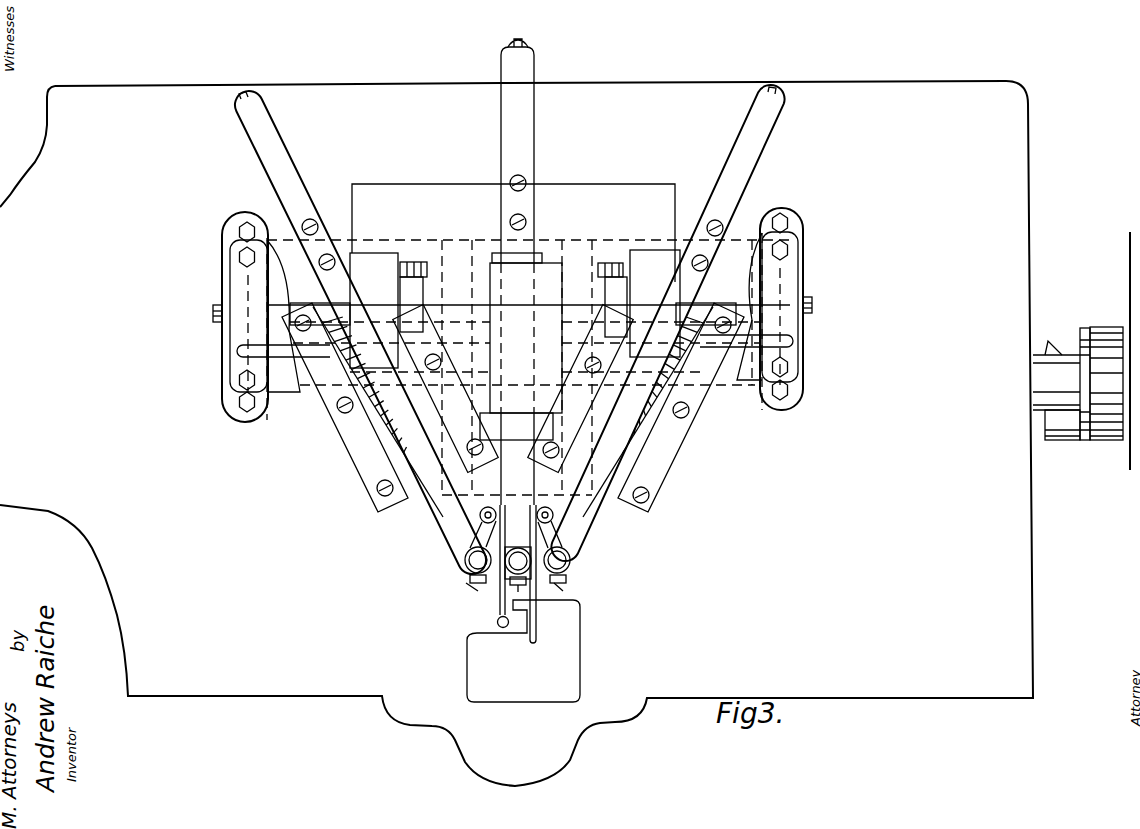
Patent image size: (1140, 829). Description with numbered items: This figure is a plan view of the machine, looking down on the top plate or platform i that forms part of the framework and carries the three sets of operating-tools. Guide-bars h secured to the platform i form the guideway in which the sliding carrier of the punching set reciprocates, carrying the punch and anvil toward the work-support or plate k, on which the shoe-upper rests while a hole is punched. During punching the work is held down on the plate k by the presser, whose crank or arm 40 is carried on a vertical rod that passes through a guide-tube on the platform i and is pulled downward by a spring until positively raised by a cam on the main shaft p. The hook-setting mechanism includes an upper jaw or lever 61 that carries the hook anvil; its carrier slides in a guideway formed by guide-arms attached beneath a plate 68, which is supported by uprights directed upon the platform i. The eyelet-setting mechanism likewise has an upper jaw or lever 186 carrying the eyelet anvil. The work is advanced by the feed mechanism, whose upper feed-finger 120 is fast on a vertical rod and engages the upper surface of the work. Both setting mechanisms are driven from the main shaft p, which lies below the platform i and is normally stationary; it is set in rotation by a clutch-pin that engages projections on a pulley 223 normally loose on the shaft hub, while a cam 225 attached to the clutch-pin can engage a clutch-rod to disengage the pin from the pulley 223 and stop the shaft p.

The plate 68 is at (283, 366).
The upper jaw or lever 186 is at (444, 518).
The upper jaw or lever 61 is at (516, 524).
The main shaft p is at (584, 538).
The guide-bars h is at (681, 407).
The top plate or platform i is at (516, 433).
The work-support or plate k is at (523, 651).
The upper feed-finger 120 is at (499, 606).
The presser-arm 40 is at (539, 623).
The pulley 223 is at (1122, 255).
The cam 225 is at (1060, 439).